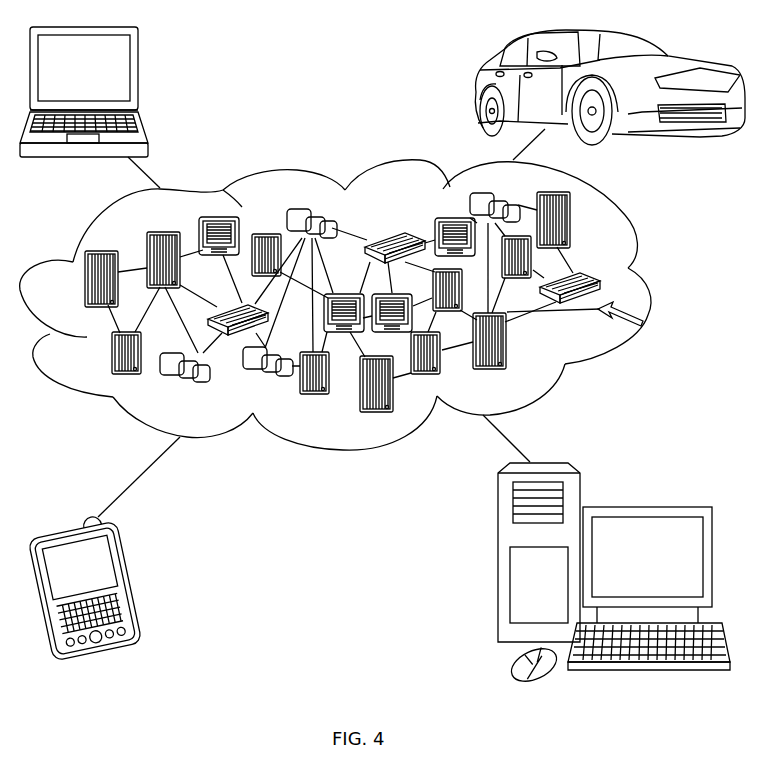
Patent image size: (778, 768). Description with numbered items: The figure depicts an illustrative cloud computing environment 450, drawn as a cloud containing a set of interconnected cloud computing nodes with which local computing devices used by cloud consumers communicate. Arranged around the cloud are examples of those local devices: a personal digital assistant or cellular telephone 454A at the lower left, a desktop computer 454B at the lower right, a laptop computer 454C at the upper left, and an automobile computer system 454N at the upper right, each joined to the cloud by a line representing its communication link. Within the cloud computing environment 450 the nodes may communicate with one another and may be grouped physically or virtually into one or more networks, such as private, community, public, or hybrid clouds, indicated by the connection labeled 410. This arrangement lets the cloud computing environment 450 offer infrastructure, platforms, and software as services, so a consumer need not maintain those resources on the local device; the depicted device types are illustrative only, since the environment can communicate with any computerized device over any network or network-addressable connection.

The network 410 is at (641, 325).
The cloud computing environment 450 is at (647, 288).
The personal digital assistant or cellular telephone 454A is at (135, 578).
The desktop computer 454B is at (643, 505).
The laptop computer 454C is at (139, 78).
The automobile computer system 454N is at (477, 90).